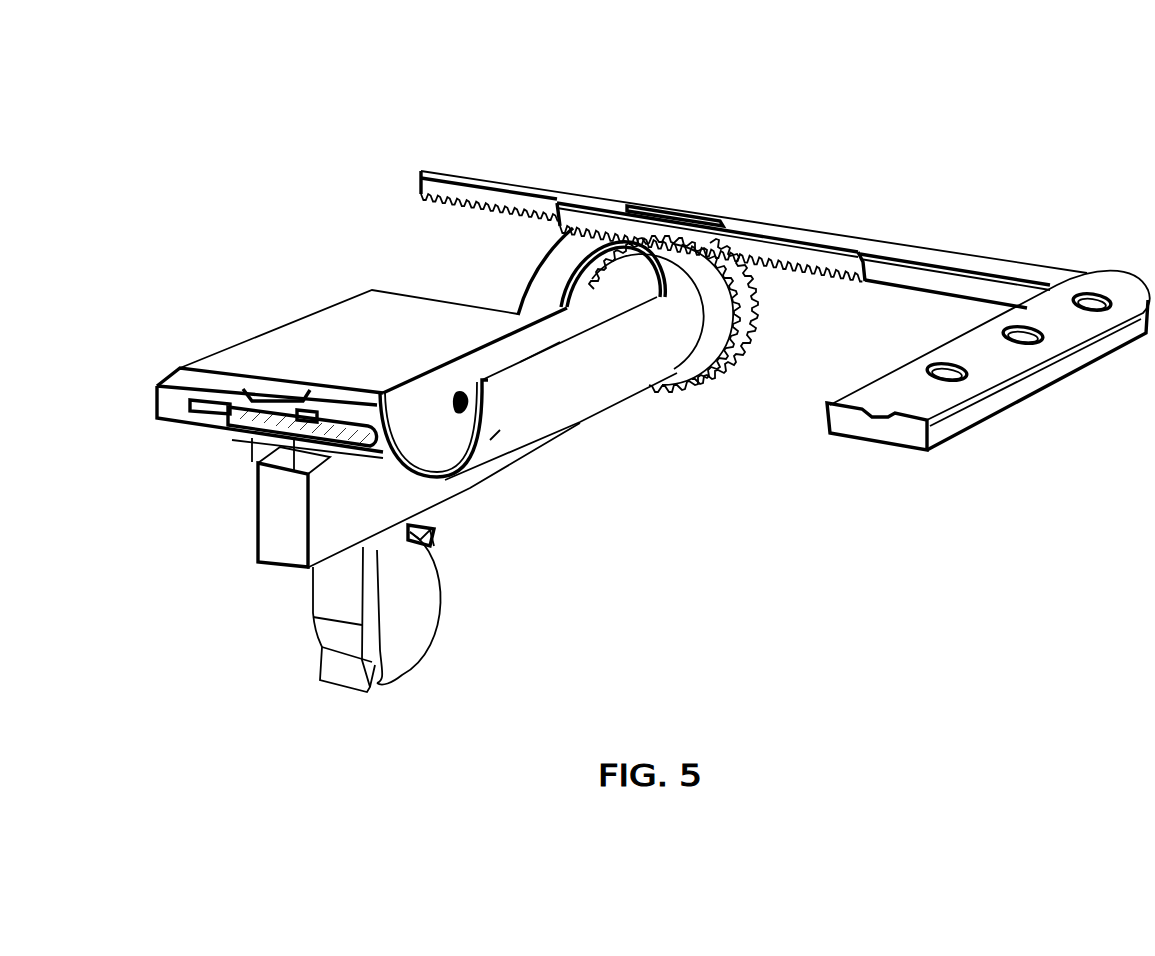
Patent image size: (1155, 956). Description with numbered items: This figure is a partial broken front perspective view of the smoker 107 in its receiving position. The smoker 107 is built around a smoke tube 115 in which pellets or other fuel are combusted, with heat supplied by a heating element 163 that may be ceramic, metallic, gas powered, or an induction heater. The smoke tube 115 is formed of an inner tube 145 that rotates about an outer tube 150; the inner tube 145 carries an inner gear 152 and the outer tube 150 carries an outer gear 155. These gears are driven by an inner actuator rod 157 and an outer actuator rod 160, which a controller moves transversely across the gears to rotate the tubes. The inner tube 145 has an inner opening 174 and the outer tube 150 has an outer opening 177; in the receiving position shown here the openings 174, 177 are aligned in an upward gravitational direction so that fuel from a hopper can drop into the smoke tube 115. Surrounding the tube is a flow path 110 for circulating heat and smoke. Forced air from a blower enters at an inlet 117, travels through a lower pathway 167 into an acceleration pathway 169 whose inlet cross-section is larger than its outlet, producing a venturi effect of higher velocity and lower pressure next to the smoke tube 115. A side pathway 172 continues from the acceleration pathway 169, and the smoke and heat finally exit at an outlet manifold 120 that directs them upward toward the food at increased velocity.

The smoker 107 is at (1046, 139).
The flow path 110 is at (930, 246).
The side pathway 172 is at (977, 288).
The outer actuator rod 160 is at (588, 207).
The inner actuator rod 157 is at (622, 227).
The inner tube 145 is at (442, 393).
The outer tube 150 is at (503, 380).
The acceleration pathway 169 is at (530, 279).
The outer gear 155 is at (723, 323).
The inner gear 152 is at (660, 395).
The inner opening 174 is at (583, 340).
The outer opening 177 is at (540, 355).
The smoke tube 115 is at (503, 408).
The heating element 163 is at (278, 422).
The lower pathway 167 is at (292, 519).
The inlet 117 is at (340, 646).
The outlet manifold 120 is at (940, 427).